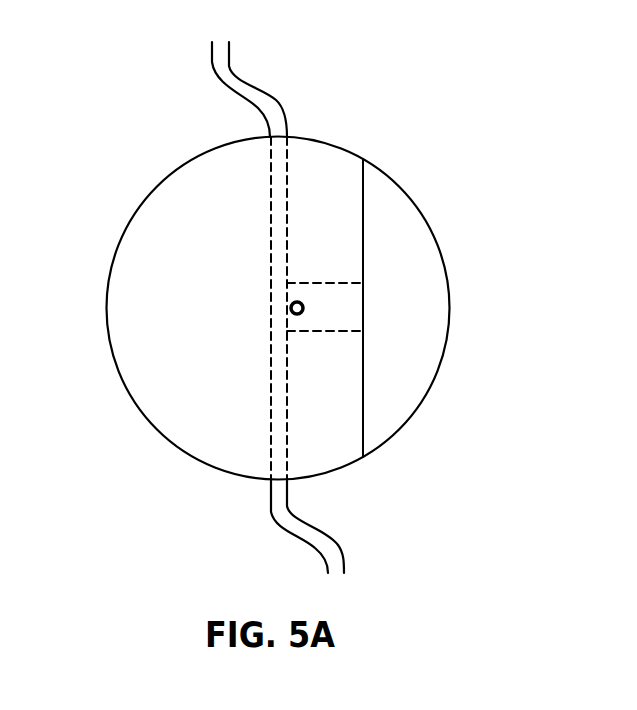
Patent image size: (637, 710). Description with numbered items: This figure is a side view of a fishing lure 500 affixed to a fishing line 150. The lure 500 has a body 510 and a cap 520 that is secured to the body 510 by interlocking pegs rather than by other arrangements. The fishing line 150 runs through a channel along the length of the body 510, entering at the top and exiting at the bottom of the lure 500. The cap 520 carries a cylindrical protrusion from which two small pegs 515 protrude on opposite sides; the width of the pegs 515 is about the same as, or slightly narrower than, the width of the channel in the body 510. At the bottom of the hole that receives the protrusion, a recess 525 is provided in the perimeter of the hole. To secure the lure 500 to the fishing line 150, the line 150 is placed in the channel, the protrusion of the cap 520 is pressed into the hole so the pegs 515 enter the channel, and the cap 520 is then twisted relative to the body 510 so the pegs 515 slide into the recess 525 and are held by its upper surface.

The fishing lure 500 is at (158, 100).
The body 510 is at (165, 207).
The cap 520 is at (407, 232).
The pegs 515 is at (290, 308).
The recess 525 is at (293, 298).
The fishing line 150 is at (235, 63).